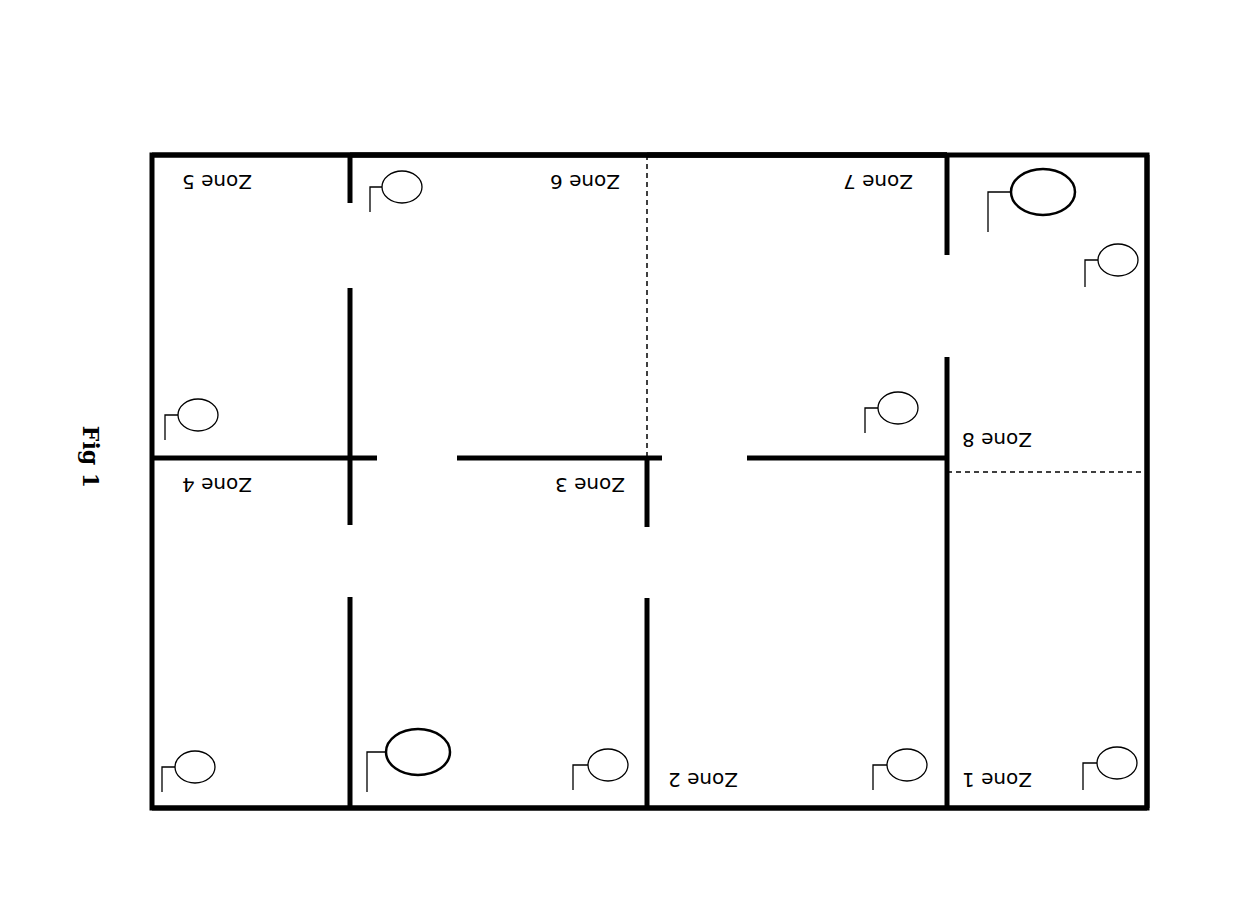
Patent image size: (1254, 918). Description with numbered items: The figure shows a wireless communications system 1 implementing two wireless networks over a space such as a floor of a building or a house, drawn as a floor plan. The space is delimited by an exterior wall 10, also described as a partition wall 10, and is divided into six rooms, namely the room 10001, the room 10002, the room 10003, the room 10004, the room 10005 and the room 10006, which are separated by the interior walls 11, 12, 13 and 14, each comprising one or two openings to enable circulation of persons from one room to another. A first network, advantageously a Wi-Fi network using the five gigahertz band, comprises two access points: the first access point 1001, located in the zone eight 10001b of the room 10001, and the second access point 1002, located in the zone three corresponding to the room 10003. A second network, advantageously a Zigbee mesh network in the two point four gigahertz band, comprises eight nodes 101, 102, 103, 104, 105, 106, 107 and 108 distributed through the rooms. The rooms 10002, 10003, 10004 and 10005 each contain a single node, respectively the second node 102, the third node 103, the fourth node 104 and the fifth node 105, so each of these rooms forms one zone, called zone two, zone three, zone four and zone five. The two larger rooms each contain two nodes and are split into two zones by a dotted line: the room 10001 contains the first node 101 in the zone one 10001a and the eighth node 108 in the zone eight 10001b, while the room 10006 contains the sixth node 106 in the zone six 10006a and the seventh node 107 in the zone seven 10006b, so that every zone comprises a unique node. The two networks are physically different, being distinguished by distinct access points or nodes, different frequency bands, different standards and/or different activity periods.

The wireless communications system 1 is at (1163, 648).
The exterior wall 10 is at (755, 156).
The wall 11 is at (944, 532).
The wall 12 is at (645, 614).
The wall 13 is at (353, 307).
The wall 14 is at (525, 460).
The node N1 101 is at (1100, 752).
The node N2 102 is at (890, 755).
The node N3 103 is at (590, 752).
The node N4 104 is at (212, 758).
The node N5 105 is at (212, 402).
The node N6 106 is at (420, 197).
The node N7 107 is at (882, 394).
The node N8 108 is at (1125, 277).
The access point AP1 1001 is at (1040, 216).
The access point AP2 1002 is at (405, 727).
The room 10001 is at (1065, 798).
The zone 1 10001a is at (1127, 578).
The zone 8 10001b is at (1127, 407).
The room 10002 is at (830, 798).
The room 10003 is at (505, 798).
The room 10004 is at (285, 798).
The room 10005 is at (322, 170).
The room 10006 is at (677, 168).
The zone 6 10006a is at (497, 168).
The zone 7 10006b is at (818, 168).